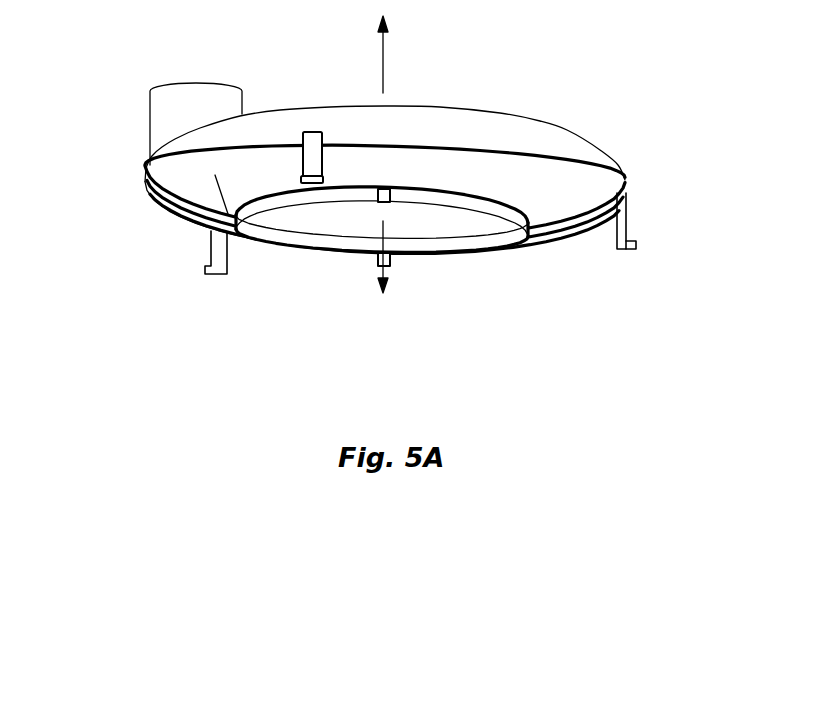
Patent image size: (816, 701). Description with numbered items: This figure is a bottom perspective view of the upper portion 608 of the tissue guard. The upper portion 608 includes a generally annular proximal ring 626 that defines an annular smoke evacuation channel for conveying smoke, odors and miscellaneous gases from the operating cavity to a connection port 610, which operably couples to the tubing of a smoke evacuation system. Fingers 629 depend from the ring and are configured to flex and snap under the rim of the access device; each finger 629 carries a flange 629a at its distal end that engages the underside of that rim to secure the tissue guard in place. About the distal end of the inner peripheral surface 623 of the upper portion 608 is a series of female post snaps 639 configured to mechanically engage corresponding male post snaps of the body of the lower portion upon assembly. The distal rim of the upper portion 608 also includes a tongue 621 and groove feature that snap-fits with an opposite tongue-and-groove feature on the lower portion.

The upper portion 608 is at (319, 96).
The connection port 610 is at (160, 115).
The tongue 621 is at (628, 193).
The inner peripheral surface 623 is at (437, 180).
The proximal ring 626 is at (480, 117).
The finger 629 is at (628, 222).
The flange 629a is at (637, 245).
The female post snap 639 is at (378, 197).